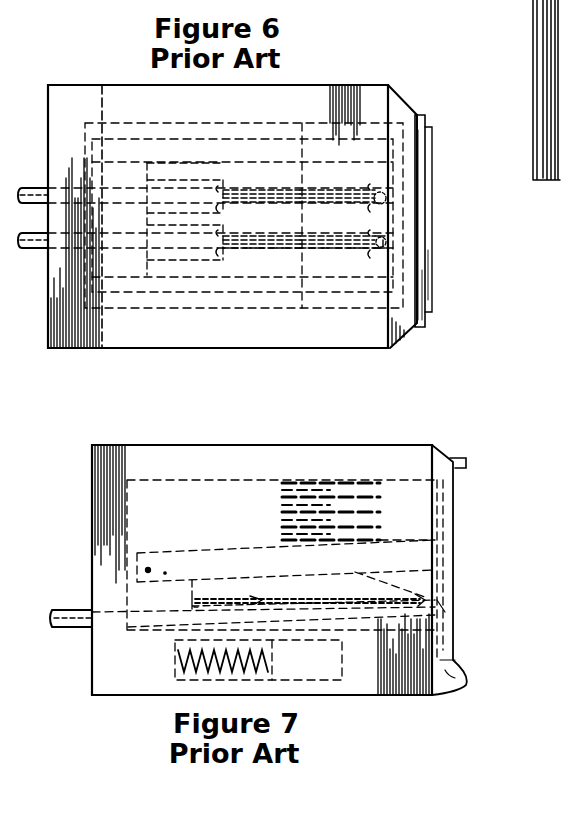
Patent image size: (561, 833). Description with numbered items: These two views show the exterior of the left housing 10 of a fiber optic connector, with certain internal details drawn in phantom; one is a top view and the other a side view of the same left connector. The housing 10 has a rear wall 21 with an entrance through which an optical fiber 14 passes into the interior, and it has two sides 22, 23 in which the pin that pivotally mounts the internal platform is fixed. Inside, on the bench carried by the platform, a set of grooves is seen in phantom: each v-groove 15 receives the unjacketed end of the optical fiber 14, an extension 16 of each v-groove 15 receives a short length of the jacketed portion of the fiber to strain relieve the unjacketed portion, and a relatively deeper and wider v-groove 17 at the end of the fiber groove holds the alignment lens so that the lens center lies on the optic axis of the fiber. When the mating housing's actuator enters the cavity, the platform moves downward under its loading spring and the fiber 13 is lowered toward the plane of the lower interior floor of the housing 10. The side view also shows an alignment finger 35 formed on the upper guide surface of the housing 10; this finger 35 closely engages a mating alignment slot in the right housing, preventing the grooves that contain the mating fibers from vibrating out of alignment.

In FIG. 6, the left housing 10 is at (48, 328).
In FIG. 7, the left housing 10 is at (93, 664).
In FIG. 6, the fiber 13 is at (312, 199).
In FIG. 6, the optical fiber 14 is at (32, 188).
In FIG. 6, the v-groove 15 is at (226, 197).
In FIG. 6, the extension of v-groove 16 is at (148, 178).
In FIG. 6, the deeper and wider v-groove 17 is at (372, 214).
In FIG. 7, the rear wall 21 is at (128, 524).
In FIG. 6, the side of housing 22 is at (146, 308).
In FIG. 6, the side of housing 23 is at (143, 131).
In FIG. 6, the alignment finger 35 is at (418, 116).
In FIG. 7, the alignment finger 35 is at (453, 461).